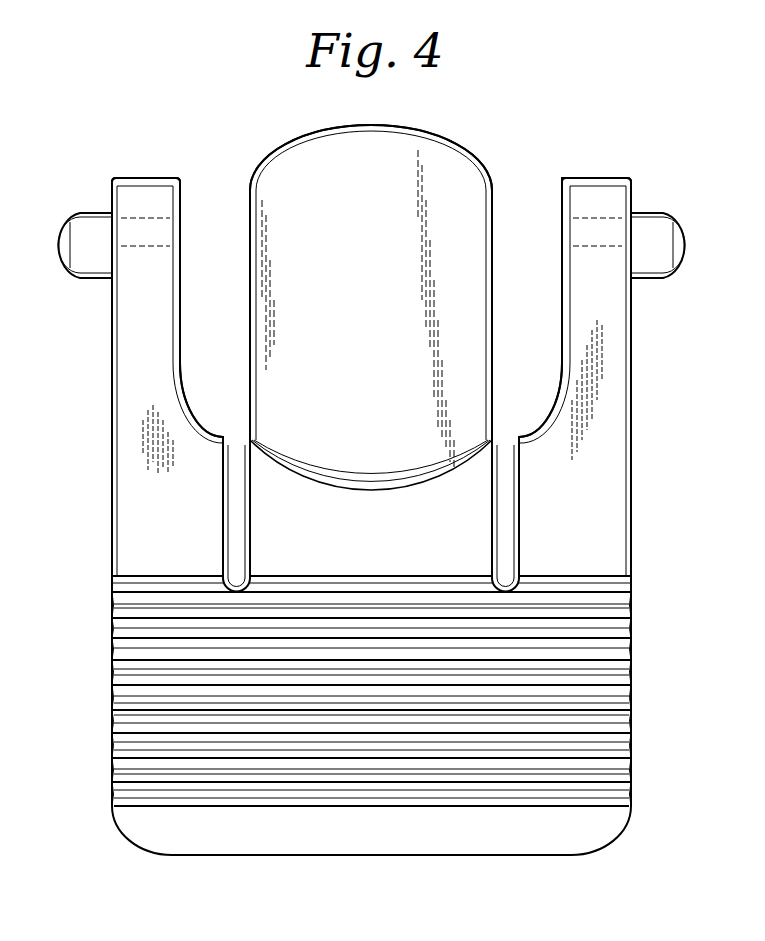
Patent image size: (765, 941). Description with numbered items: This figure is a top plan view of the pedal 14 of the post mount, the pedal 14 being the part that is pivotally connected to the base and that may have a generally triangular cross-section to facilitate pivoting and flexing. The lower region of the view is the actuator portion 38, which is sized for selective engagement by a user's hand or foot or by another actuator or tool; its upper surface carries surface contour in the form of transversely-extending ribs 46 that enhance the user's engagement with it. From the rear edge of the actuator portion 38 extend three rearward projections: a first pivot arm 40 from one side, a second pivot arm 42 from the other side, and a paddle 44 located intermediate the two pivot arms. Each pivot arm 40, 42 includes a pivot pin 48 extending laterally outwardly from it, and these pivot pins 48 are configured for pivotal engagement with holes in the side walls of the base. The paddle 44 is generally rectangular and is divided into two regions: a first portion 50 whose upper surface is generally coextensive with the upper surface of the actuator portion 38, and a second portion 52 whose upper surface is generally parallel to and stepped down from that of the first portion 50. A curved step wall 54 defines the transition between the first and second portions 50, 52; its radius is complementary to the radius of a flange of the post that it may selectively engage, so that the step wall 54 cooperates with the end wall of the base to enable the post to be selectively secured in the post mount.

The pedal 14 is at (100, 540).
The actuator portion 38 is at (334, 706).
The first pivot arm 40 is at (557, 531).
The second pivot arm 42 is at (152, 531).
The paddle 44 is at (311, 336).
The transversely-extending ribs 46 is at (110, 650).
The pivot pin 48 is at (59, 224).
The first portion 50 is at (412, 551).
The second portion 52 is at (379, 336).
The curved step wall 54 is at (373, 479).